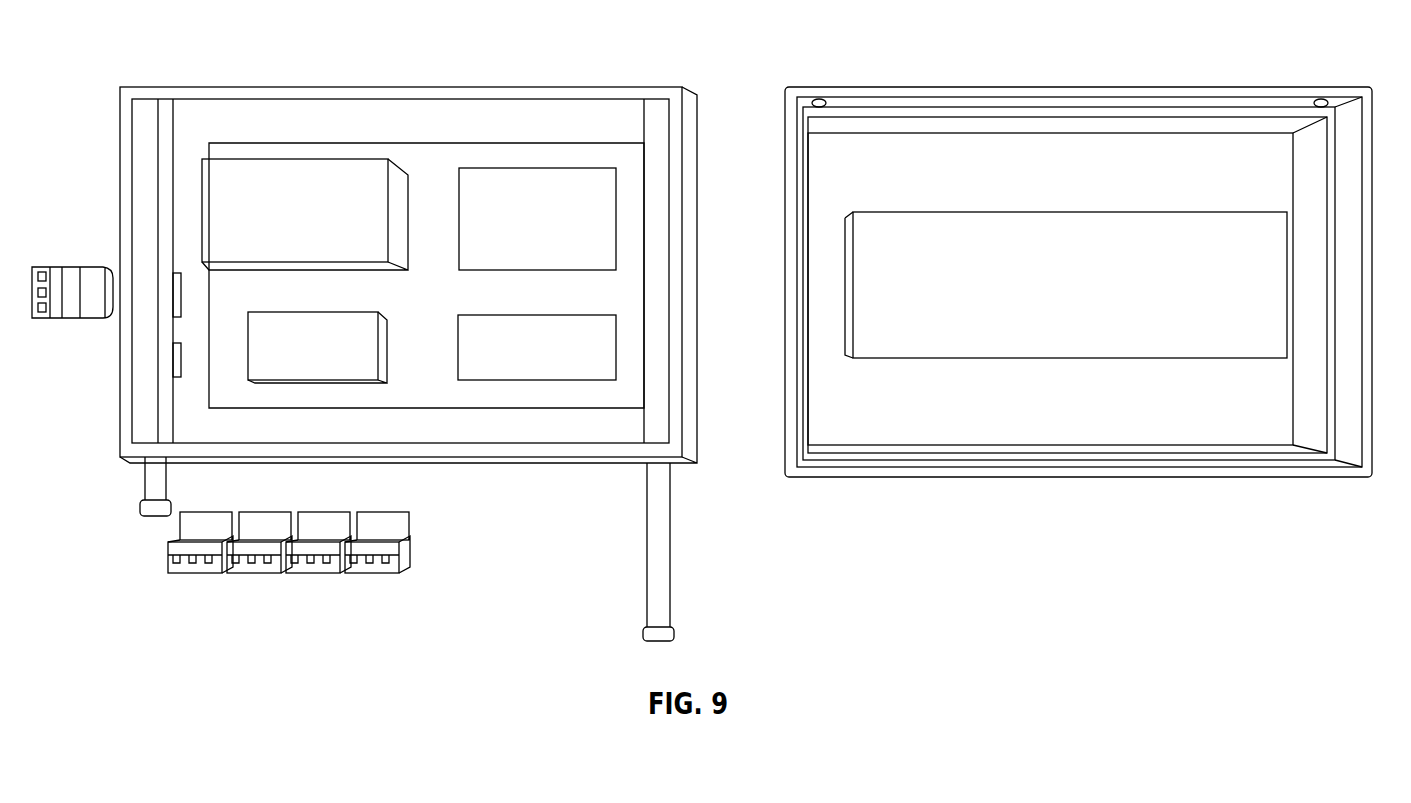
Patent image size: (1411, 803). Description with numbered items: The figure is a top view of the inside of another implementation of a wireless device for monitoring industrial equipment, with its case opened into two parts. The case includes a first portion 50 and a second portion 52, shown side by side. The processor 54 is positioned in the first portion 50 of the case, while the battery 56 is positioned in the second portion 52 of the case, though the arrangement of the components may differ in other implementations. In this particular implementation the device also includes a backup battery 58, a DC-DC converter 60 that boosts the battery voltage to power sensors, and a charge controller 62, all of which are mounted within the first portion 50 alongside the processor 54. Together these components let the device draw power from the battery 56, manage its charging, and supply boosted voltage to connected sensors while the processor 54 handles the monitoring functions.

The first portion 50 is at (1233, 472).
The second portion 52 is at (603, 88).
The processor 54 is at (545, 360).
The battery 56 is at (951, 333).
The backup battery 58 is at (597, 223).
The DC-DC converter 60 is at (318, 355).
The charge controller 62 is at (330, 185).